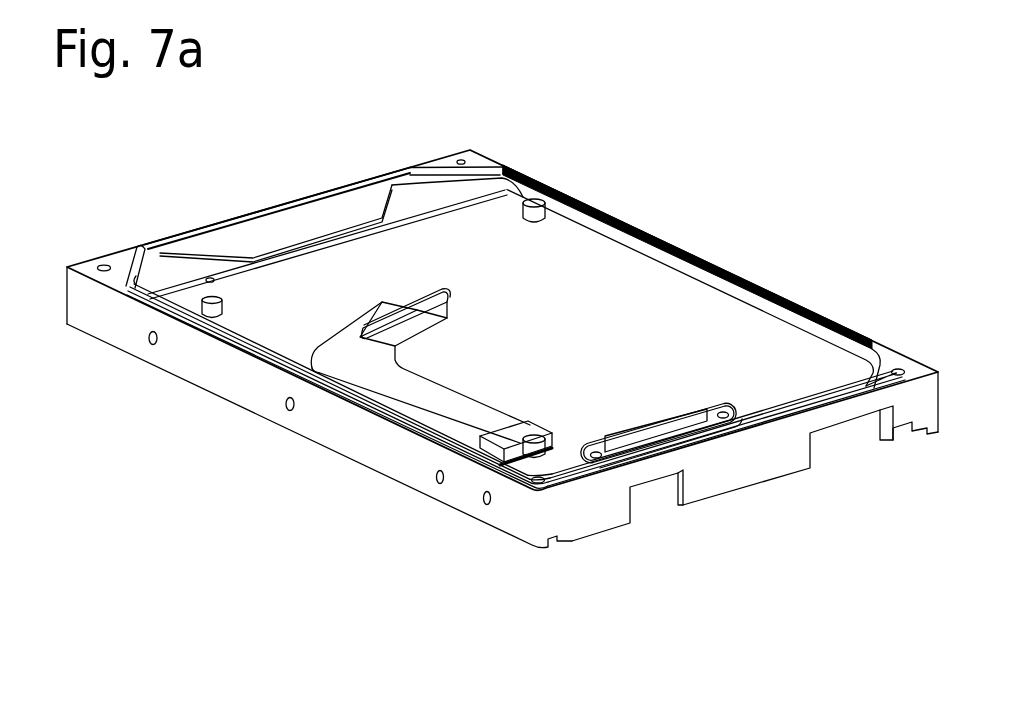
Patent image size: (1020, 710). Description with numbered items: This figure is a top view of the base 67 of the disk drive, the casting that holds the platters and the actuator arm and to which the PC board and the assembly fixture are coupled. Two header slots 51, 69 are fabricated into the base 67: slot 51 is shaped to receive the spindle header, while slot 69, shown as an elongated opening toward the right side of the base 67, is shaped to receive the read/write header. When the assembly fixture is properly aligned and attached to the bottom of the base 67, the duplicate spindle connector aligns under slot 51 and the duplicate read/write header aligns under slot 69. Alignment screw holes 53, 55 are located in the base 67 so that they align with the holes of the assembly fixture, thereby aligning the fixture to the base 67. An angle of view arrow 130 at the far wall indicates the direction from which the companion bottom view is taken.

The angle of view arrow 130 is at (622, 202).
The base 67 is at (595, 513).
The header slot 69 is at (662, 437).
The alignment screw hole 53 is at (530, 200).
The alignment screw hole 55 is at (533, 444).
The header slot 51 is at (505, 440).